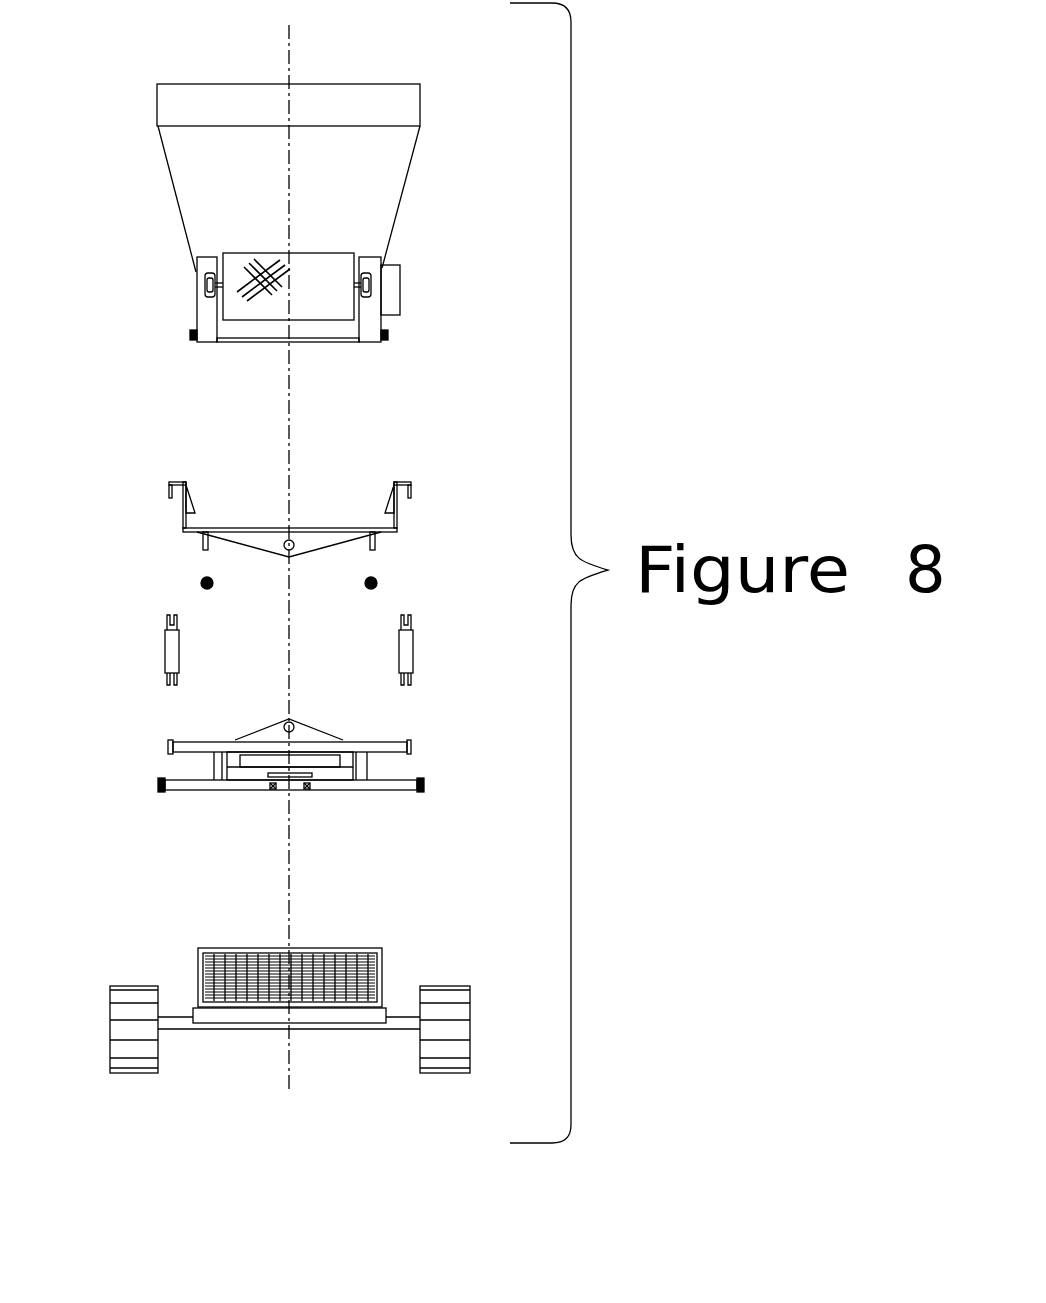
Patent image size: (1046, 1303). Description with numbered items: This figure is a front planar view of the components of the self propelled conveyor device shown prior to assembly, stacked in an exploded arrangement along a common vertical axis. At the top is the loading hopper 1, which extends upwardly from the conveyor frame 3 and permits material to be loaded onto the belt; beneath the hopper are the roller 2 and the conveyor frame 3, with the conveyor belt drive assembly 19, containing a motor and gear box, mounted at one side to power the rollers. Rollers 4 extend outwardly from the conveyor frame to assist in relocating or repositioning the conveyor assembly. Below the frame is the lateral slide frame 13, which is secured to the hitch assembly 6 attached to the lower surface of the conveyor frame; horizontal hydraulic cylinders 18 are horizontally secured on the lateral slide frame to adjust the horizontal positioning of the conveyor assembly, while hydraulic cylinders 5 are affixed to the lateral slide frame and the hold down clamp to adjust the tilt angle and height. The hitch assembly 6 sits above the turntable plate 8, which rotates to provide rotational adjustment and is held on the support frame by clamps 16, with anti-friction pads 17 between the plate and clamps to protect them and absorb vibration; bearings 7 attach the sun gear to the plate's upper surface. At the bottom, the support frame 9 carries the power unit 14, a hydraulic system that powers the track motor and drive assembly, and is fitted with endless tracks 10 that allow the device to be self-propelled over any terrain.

The loading hopper 1 is at (343, 73).
The roller 2 is at (303, 252).
The conveyor frame 3 is at (196, 283).
The rollers 4 is at (187, 338).
The hydraulic cylinders 5 is at (163, 652).
The hitch assembly 6 is at (300, 722).
The bearings 7 is at (273, 792).
The turntable plate 8 is at (358, 790).
The support frame 9 is at (217, 1030).
The endless tracks 10 is at (110, 986).
The lateral slide frame 13 is at (398, 480).
The power unit 14 is at (343, 947).
The clamps 16 is at (407, 777).
The anti-friction pads 17 is at (172, 783).
The horizontal hydraulic cylinders 18 is at (198, 578).
The conveyor belt drive assembly 19 is at (403, 278).